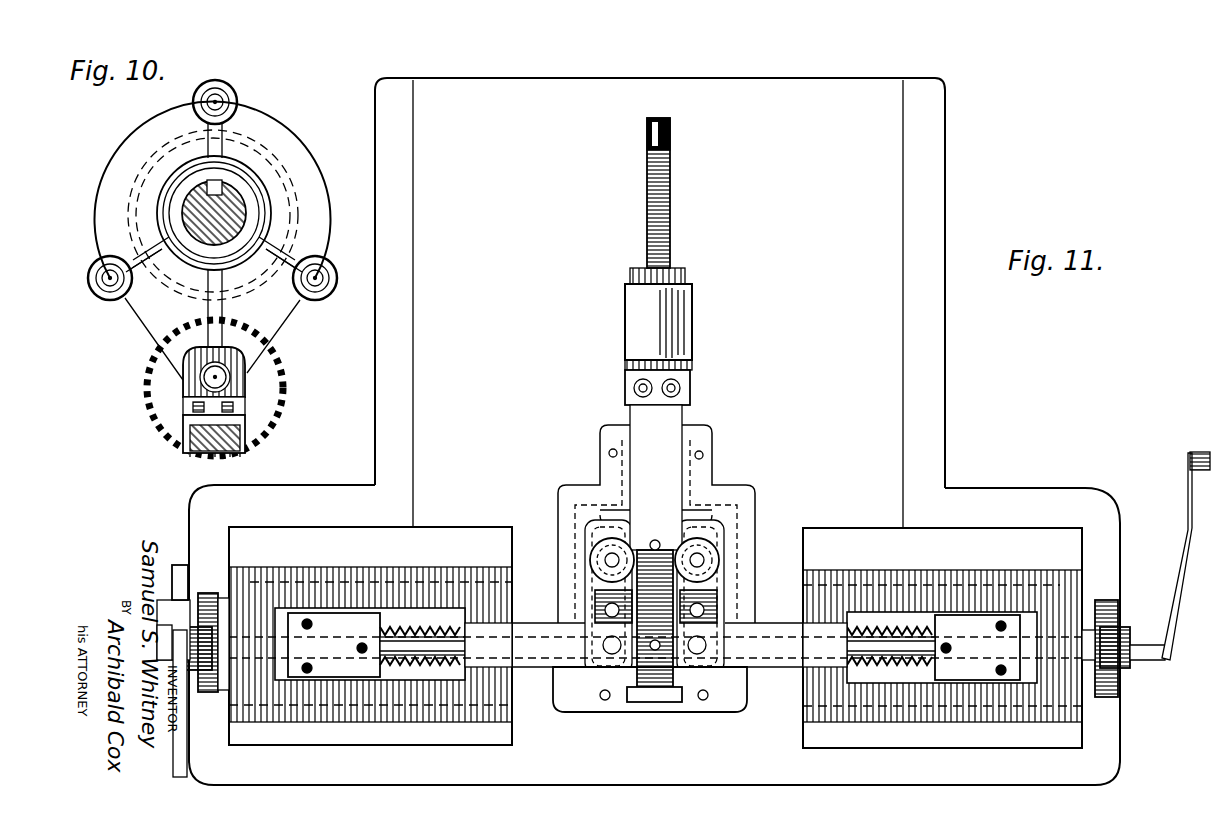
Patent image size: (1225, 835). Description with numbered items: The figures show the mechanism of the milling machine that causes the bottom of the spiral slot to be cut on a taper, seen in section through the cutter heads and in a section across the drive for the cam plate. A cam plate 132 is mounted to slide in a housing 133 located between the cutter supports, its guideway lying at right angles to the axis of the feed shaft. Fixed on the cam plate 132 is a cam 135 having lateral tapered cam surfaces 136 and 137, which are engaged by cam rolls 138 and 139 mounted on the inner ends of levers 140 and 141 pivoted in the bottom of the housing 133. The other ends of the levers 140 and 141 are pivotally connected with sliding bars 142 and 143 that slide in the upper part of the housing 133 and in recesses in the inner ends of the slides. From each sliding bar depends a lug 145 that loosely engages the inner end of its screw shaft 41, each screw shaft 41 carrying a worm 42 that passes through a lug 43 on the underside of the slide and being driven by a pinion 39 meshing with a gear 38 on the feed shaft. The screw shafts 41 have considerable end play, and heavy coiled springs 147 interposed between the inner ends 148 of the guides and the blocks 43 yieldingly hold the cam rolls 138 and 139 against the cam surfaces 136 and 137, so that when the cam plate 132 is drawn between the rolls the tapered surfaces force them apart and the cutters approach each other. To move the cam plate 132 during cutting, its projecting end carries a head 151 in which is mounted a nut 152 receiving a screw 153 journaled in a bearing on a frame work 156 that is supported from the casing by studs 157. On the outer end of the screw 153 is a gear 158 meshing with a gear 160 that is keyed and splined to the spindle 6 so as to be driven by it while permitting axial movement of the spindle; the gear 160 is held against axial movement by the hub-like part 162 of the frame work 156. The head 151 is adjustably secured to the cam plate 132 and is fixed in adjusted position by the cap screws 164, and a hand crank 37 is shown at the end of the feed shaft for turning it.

In FIG. 10, the spindle 6 is at (240, 205).
In FIG. 11, the hand crank 37 is at (1185, 510).
In FIG. 11, the gear 38 is at (212, 593).
In FIG. 11, the pinion 39 is at (170, 600).
In FIG. 11, the screw shaft 41 is at (482, 632).
In FIG. 11, the worm 42 is at (392, 620).
In FIG. 11, the lug 43 is at (654, 646).
In FIG. 10, the cam plate 132 is at (200, 454).
In FIG. 11, the cam plate 132 is at (660, 432).
In FIG. 11, the housing 133 is at (730, 500).
In FIG. 11, the cam 135 is at (705, 542).
In FIG. 11, the cam surface 136 is at (700, 525).
In FIG. 11, the cam surface 137 is at (618, 525).
In FIG. 11, the cam roll 138 is at (712, 552).
In FIG. 11, the cam roll 139 is at (598, 545).
In FIG. 11, the lever 140 is at (718, 592).
In FIG. 11, the lever 141 is at (596, 592).
In FIG. 11, the sliding bar 142 is at (735, 677).
In FIG. 11, the sliding bar 143 is at (572, 677).
In FIG. 11, the lug 145 is at (530, 625).
In FIG. 11, the coiled spring 147 is at (415, 627).
In FIG. 11, the inner end of guide 148 is at (565, 690).
In FIG. 11, the head 151 is at (672, 323).
In FIG. 10, the nut 152 is at (222, 357).
In FIG. 11, the nut 152 is at (675, 280).
In FIG. 10, the screw 153 is at (222, 377).
In FIG. 11, the screw 153 is at (671, 140).
In FIG. 10, the frame work 156 is at (131, 150).
In FIG. 10, the stud 157 is at (230, 98).
In FIG. 10, the gear 158 is at (265, 410).
In FIG. 10, the gear 160 is at (300, 195).
In FIG. 10, the hub-like part 162 is at (272, 231).
In FIG. 10, the cap screw 164 is at (208, 407).
In FIG. 11, the cap screw 164 is at (655, 400).